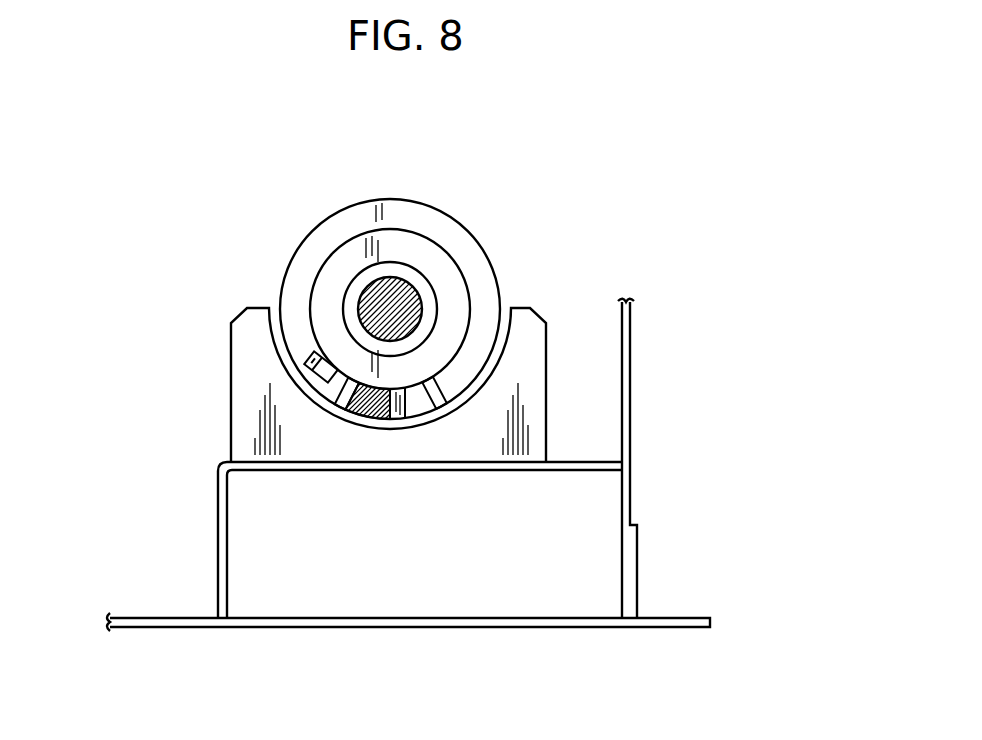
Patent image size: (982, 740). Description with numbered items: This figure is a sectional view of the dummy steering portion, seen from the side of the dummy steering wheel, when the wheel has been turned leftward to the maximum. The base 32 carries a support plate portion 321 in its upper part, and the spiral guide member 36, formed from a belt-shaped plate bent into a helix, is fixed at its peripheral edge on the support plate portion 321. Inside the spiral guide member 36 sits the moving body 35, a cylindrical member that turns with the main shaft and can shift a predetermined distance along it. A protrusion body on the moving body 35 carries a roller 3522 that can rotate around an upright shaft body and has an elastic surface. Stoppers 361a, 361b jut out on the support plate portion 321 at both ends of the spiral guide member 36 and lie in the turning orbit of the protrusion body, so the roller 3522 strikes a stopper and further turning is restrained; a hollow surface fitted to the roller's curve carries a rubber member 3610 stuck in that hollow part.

The base 32 is at (603, 462).
The support plate portion 321 is at (243, 392).
The moving body 35 is at (383, 228).
The spiral guide member 36 is at (476, 232).
The roller 3522 is at (309, 352).
The rubber member 3610 is at (335, 393).
The stopper 361a is at (372, 410).
The stopper 361b is at (400, 403).